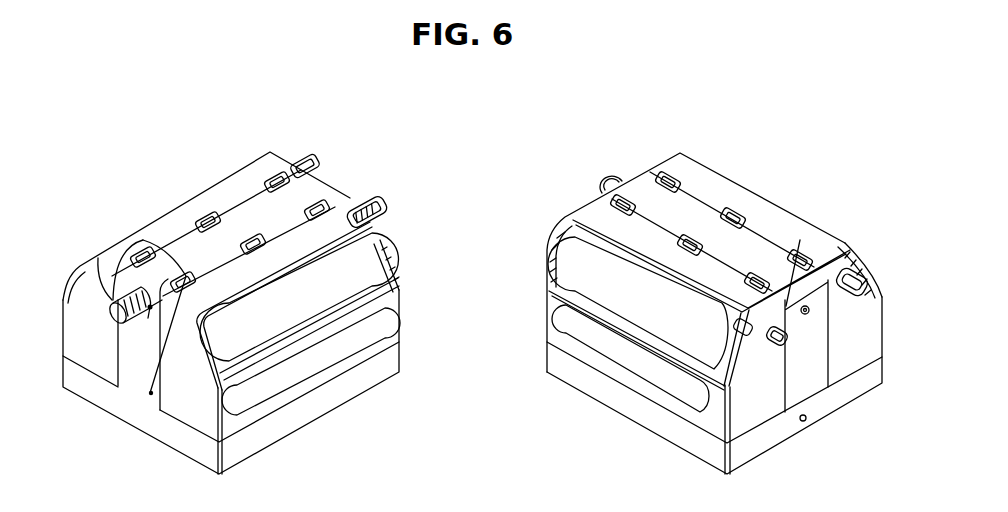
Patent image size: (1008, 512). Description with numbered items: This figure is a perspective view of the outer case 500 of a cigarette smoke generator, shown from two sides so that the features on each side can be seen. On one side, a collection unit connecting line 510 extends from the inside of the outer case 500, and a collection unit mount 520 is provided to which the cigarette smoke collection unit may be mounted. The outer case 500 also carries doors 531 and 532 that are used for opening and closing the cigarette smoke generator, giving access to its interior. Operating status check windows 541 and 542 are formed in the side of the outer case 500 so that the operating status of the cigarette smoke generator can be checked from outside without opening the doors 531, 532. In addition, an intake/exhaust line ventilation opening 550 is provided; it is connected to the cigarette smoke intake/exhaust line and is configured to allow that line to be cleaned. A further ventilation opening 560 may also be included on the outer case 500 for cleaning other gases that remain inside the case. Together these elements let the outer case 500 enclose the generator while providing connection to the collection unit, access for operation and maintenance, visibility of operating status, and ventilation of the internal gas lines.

The outer case 500 is at (487, 150).
The collection unit connecting line 510 is at (852, 272).
The collection unit mount 520 is at (808, 316).
The door 531 is at (227, 176).
The door 532 is at (347, 237).
The operating status check window 541 is at (253, 317).
The operating status check window 542 is at (262, 388).
The intake/exhaust line ventilation opening 550 is at (150, 305).
The ventilation opening 560 is at (112, 310).